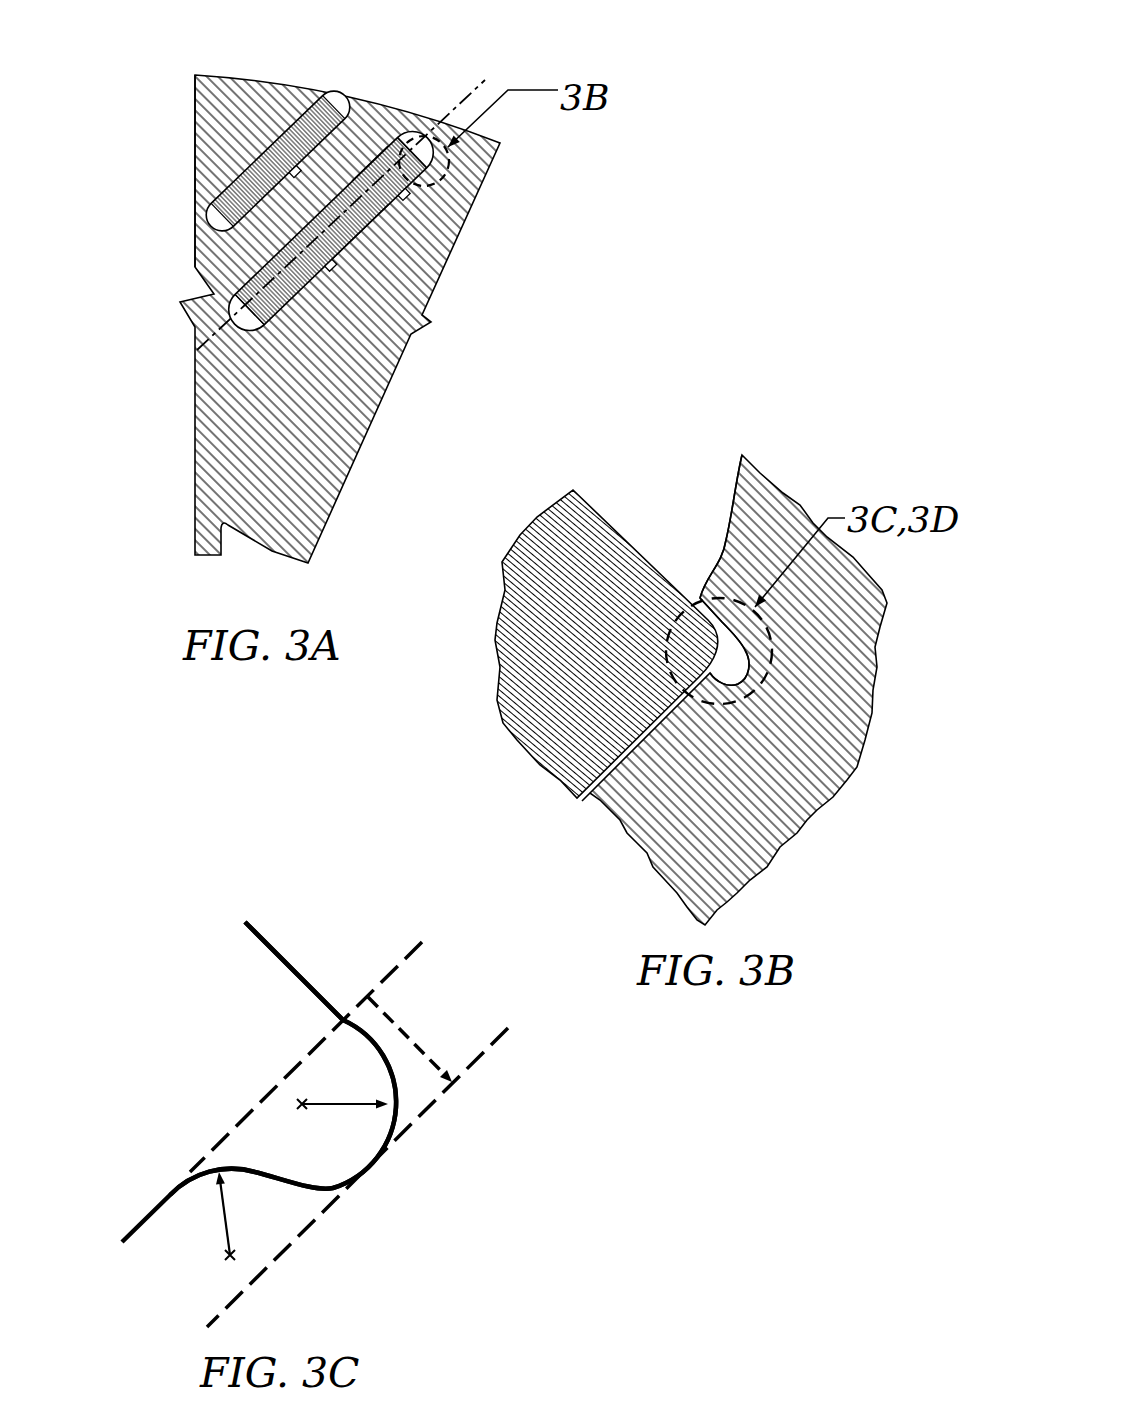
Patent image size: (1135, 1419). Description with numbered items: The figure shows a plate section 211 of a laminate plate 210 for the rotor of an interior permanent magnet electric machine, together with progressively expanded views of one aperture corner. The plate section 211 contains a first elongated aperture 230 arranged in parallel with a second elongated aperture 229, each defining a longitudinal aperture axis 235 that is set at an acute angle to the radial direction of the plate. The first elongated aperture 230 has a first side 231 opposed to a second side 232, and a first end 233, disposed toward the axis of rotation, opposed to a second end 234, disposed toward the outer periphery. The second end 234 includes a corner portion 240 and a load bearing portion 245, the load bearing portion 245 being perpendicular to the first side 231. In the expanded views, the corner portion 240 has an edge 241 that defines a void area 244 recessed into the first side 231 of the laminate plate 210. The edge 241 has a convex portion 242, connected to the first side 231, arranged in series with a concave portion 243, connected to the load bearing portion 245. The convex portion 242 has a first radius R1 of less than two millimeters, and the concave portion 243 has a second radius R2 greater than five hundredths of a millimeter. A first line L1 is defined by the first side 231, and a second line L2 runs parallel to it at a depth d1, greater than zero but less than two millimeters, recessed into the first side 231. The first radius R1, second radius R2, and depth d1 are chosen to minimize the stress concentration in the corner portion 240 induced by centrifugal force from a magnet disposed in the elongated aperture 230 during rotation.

In FIG. 3A, the laminate plate 210 is at (247, 84).
In FIG. 3B, the laminate plate 210 is at (785, 492).
In FIG. 3C, the laminate plate 210 is at (420, 905).
In FIG. 3A, the plate section 211 is at (192, 105).
In FIG. 3A, the second elongated aperture 229 is at (222, 222).
In FIG. 3A, the first elongated aperture 230 is at (232, 298).
In FIG. 3A, the first side 231 is at (365, 233).
In FIG. 3A, the second side 232 is at (363, 145).
In FIG. 3A, the first end 233 is at (250, 325).
In FIG. 3A, the second end 234 is at (405, 130).
In FIG. 3A, the longitudinal aperture axis 235 is at (470, 108).
In FIG. 3A, the corner portion 240 is at (445, 170).
In FIG. 3B, the corner portion 240 is at (745, 672).
In FIG. 3C, the corner portion 240 is at (338, 983).
In FIG. 3C, the edge 241 is at (383, 1140).
In FIG. 3C, the convex portion 242 is at (238, 1163).
In FIG. 3C, the concave portion 243 is at (340, 1176).
In FIG. 3B, the void area 244 is at (733, 661).
In FIG. 3B, the load bearing portion 245 is at (712, 580).
In FIG. 3C, the first radius R1 is at (338, 1098).
In FIG. 3C, the second radius R2 is at (220, 1215).
In FIG. 3C, the first line L1 is at (320, 1044).
In FIG. 3C, the second line L2 is at (372, 1164).
In FIG. 3C, the depth d1 is at (403, 1031).